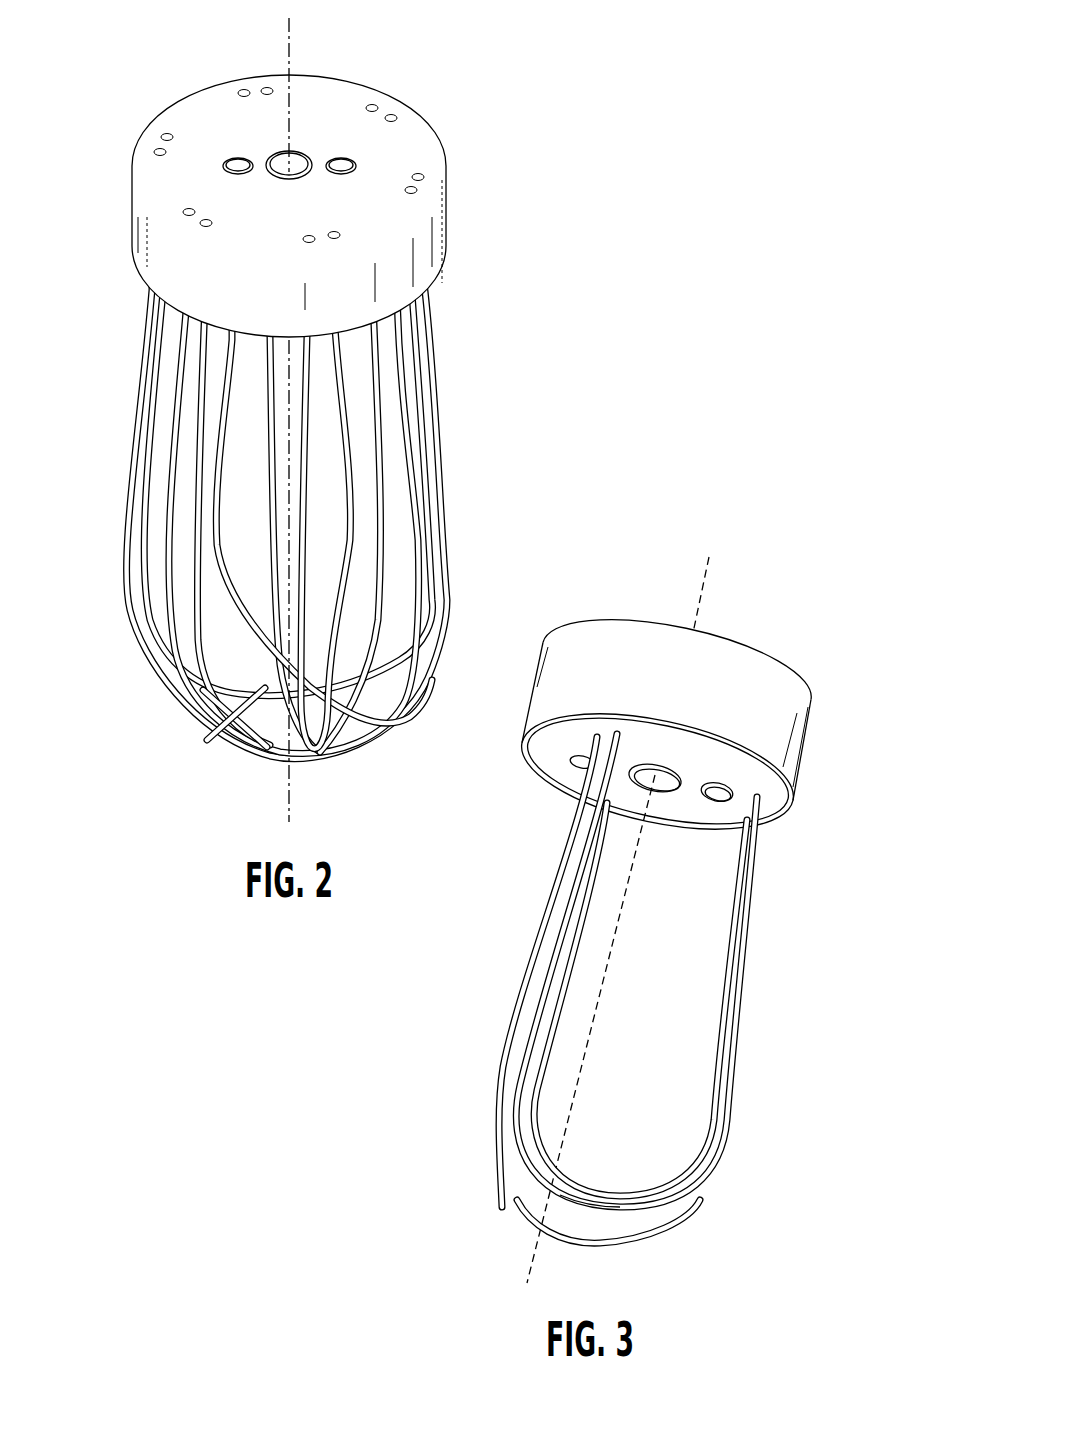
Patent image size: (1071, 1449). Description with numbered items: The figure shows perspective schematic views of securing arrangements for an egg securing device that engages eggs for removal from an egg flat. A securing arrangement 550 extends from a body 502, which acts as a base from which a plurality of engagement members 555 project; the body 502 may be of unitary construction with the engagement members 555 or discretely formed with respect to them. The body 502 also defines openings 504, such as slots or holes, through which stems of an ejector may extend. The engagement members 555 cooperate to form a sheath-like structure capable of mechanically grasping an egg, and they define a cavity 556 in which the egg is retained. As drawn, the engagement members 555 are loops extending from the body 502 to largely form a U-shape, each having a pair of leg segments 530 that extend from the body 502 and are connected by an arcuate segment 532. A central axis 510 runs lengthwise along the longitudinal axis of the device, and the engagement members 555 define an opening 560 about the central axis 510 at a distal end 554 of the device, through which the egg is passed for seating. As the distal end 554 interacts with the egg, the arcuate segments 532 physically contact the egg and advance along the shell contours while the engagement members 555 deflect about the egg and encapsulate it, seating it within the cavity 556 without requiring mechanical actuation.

In FIG. 2, the body 502 is at (190, 128).
In FIG. 3, the body 502 is at (732, 660).
In FIG. 2, the openings 504 is at (237, 150).
In FIG. 3, the openings 504 is at (580, 768).
In FIG. 2, the central axis 510 is at (289, 48).
In FIG. 3, the central axis 510 is at (707, 575).
In FIG. 2, the leg segments 530 is at (438, 405).
In FIG. 3, the leg segments 530 is at (760, 898).
In FIG. 2, the arcuate segment 532 is at (219, 757).
In FIG. 3, the arcuate segment 532 is at (563, 1170).
In FIG. 2, the securing arrangement 550 is at (273, 544).
In FIG. 3, the securing arrangement 550 is at (632, 1022).
In FIG. 2, the distal end 554 is at (376, 738).
In FIG. 3, the distal end 554 is at (681, 970).
In FIG. 2, the engagement members 555 is at (448, 583).
In FIG. 3, the engagement members 555 is at (617, 1205).
In FIG. 2, the cavity 556 is at (328, 560).
In FIG. 3, the cavity 556 is at (654, 1001).
In FIG. 2, the opening 560 is at (285, 764).
In FIG. 3, the opening 560 is at (560, 1207).